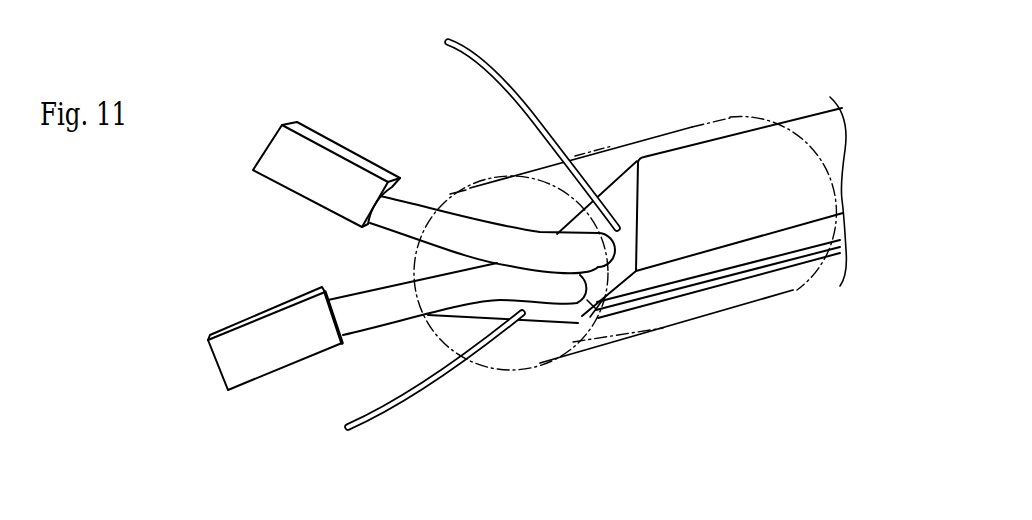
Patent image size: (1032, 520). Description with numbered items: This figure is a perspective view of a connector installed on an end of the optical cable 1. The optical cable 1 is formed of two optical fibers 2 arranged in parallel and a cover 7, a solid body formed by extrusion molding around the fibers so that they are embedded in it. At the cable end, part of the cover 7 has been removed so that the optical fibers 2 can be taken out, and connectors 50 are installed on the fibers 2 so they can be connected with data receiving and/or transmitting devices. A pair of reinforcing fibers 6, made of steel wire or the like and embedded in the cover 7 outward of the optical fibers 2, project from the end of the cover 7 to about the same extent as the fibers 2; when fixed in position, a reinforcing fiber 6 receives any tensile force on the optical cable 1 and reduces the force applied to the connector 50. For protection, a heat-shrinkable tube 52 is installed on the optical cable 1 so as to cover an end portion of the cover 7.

The optical cable 1 is at (750, 159).
The optical fibers 2 is at (404, 212).
The reinforcing fibers 6 is at (503, 77).
The cover 7 is at (622, 188).
The connectors 50 is at (279, 185).
The heat-shrinkable tube 52 is at (600, 346).